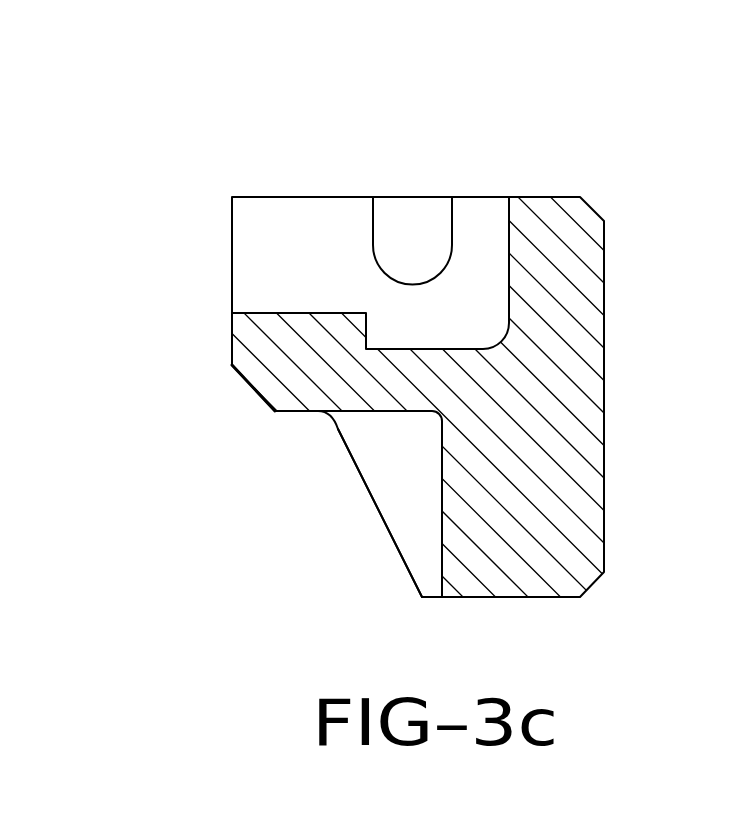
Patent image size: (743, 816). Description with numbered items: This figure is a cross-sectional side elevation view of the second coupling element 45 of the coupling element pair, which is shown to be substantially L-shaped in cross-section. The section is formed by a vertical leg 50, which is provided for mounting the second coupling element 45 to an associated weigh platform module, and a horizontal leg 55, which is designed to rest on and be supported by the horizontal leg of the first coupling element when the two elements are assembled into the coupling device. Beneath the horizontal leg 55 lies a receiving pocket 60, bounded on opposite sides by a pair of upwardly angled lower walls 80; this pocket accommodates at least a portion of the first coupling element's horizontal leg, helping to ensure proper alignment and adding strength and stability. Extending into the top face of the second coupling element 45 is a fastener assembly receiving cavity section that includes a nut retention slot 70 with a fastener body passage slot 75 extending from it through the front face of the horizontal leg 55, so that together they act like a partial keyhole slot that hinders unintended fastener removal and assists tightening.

The second coupling element 45 is at (117, 177).
The vertical leg 50 is at (572, 393).
The horizontal leg 55 is at (288, 372).
The receiving pocket 60 is at (390, 460).
The nut retention slot 70 is at (472, 218).
The fastener body passage slot 75 is at (303, 223).
The upwardly angled lower walls 80 is at (382, 518).